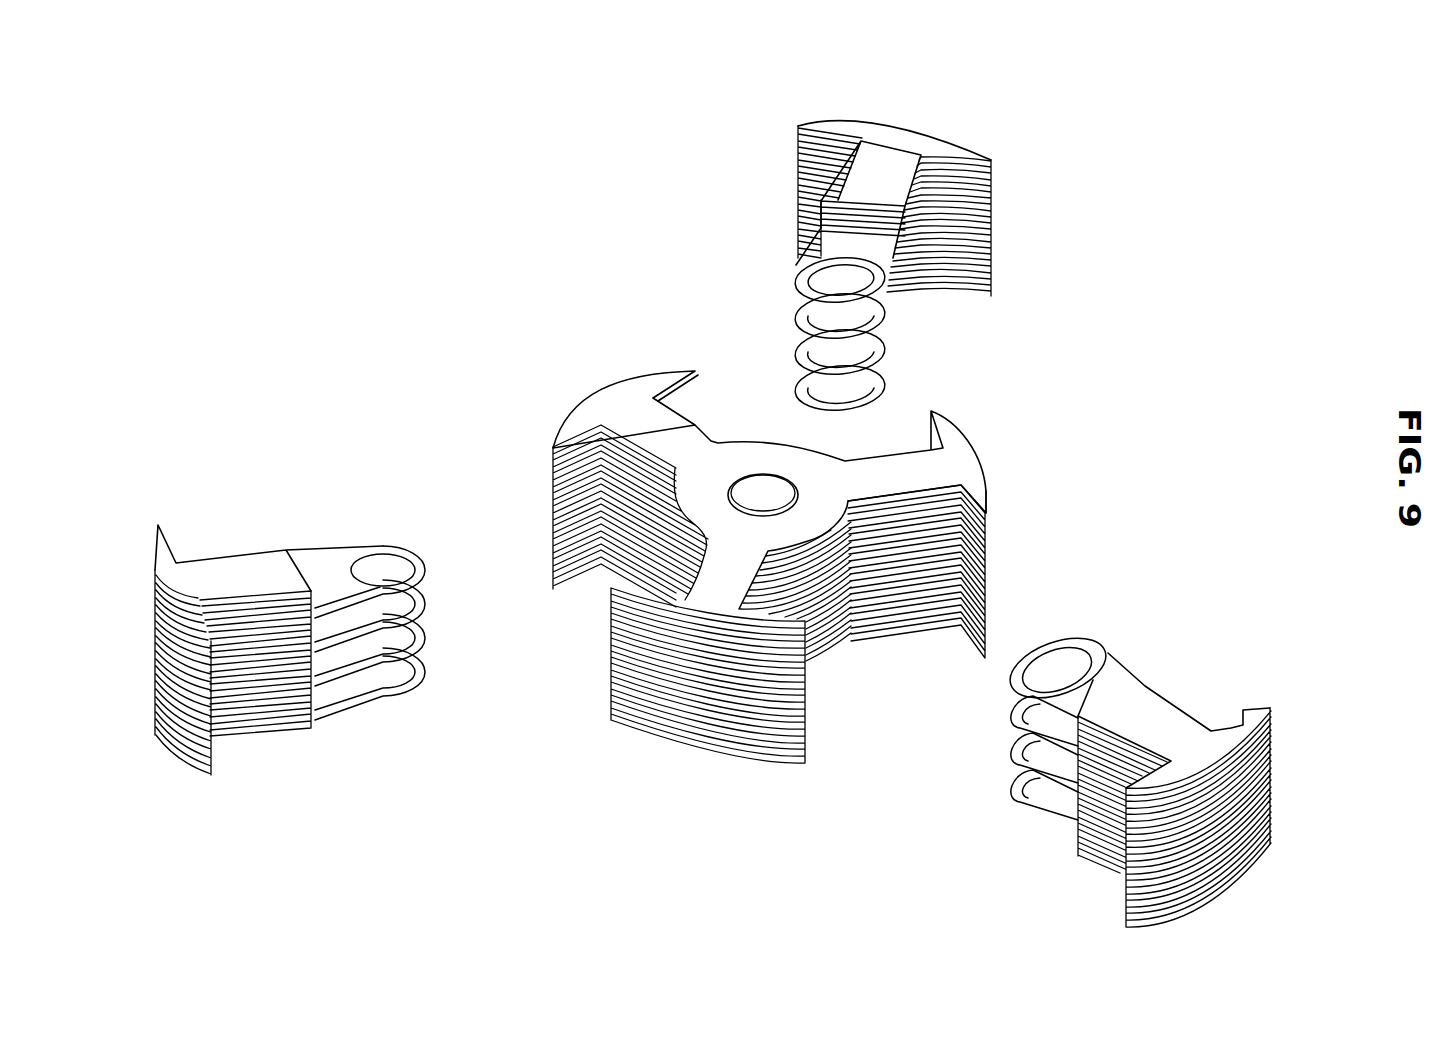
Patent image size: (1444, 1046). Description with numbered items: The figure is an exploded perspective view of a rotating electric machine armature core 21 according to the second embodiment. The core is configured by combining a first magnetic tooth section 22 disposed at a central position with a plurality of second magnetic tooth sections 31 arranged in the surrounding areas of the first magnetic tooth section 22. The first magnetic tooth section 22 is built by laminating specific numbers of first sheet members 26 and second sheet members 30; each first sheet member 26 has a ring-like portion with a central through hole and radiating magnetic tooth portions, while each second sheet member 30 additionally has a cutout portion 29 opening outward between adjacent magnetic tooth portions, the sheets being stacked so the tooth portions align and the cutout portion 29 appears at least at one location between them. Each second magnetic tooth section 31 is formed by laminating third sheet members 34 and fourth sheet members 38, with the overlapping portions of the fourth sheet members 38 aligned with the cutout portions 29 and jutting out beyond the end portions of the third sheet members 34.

The rotating electric machine armature core 21 is at (682, 207).
The first magnetic tooth section 22 is at (627, 382).
The first sheet member 26 is at (600, 586).
The cutout portion 29 is at (824, 514).
The second sheet member 30 is at (603, 582).
The second magnetic tooth section 31 is at (915, 127).
The third sheet member 34 is at (232, 548).
The fourth sheet member 38 is at (338, 540).